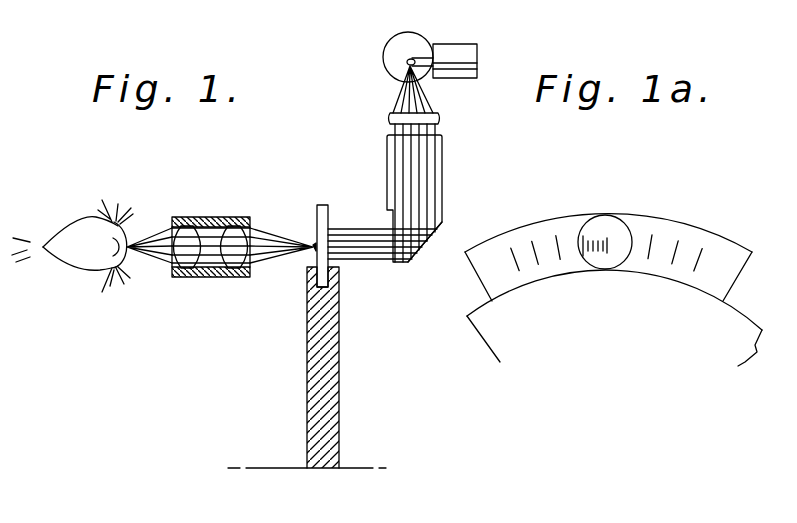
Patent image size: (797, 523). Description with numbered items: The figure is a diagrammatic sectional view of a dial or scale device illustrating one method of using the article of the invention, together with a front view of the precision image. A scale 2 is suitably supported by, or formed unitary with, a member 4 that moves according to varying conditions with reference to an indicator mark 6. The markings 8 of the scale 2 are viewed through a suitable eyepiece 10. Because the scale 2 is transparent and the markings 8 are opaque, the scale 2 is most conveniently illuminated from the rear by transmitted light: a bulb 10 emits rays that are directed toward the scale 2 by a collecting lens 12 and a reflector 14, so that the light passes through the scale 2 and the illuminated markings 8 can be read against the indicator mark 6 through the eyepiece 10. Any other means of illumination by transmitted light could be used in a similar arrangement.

In FIG. 1, the scale 2 is at (327, 210).
In FIG. 1, the member 4 is at (339, 380).
In FIG. 1a, the indicator mark 6 is at (607, 237).
In FIG. 1, the markings 8 is at (306, 255).
In FIG. 1a, the markings 8 is at (676, 255).
In FIG. 1, the eyepiece 10 is at (200, 278).
In FIG. 1, the collecting lens 12 is at (441, 118).
In FIG. 1, the reflector 14 is at (432, 242).